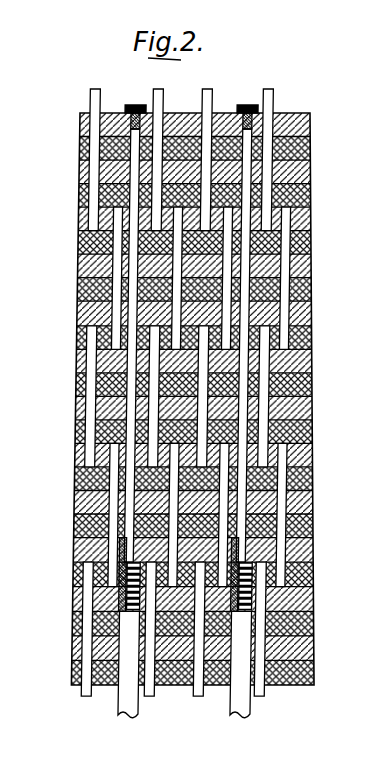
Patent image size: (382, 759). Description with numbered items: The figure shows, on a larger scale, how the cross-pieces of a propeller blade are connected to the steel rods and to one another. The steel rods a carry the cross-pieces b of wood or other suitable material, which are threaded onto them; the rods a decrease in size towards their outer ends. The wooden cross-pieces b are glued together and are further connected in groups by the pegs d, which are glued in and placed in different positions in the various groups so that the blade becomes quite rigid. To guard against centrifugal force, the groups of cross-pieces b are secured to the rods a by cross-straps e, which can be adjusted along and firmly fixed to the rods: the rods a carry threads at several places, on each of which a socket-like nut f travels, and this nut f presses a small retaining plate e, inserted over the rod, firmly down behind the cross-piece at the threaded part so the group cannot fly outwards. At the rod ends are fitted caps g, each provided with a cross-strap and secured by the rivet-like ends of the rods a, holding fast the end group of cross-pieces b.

The steel rod a is at (193, 398).
The cross-piece b is at (196, 399).
The peg d is at (186, 392).
The cross-strap e is at (185, 664).
The socket-like nut f is at (190, 586).
The cap g is at (188, 358).